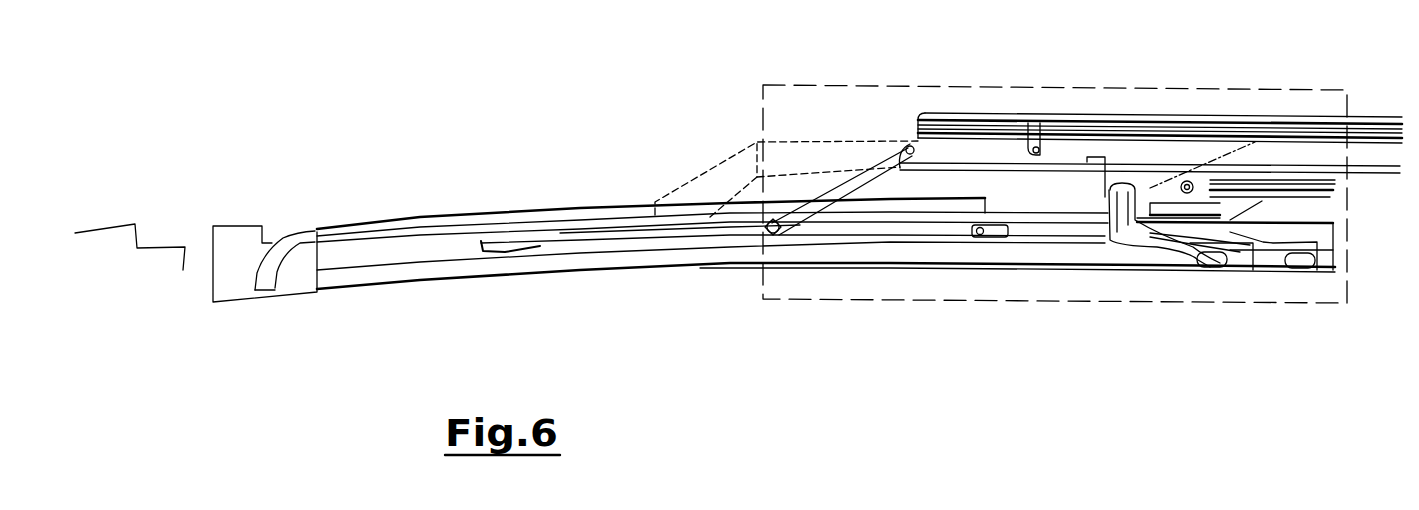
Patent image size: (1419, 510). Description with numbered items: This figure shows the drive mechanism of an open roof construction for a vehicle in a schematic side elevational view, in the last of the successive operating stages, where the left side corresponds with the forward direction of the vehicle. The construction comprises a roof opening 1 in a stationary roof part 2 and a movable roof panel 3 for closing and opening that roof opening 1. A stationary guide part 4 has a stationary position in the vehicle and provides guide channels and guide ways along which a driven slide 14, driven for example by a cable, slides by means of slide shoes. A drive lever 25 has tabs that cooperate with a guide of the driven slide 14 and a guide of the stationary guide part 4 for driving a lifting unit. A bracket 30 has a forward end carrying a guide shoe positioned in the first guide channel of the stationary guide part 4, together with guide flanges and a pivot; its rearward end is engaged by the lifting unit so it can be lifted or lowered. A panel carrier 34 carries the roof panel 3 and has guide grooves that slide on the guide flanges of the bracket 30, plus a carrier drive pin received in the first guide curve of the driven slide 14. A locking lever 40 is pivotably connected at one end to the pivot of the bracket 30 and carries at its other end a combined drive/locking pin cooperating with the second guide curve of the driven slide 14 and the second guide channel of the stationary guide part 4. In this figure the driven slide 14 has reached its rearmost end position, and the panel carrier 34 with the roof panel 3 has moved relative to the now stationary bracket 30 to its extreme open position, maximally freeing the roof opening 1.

The roof opening 1 is at (423, 210).
The stationary roof part 2 is at (103, 228).
The roof panel 3 is at (1252, 115).
The stationary guide part 4 is at (237, 242).
The driven slide 14 is at (1268, 248).
The drive lever 25 is at (913, 240).
The bracket 30 is at (682, 189).
The panel carrier 34 is at (1150, 150).
The locking lever 40 is at (843, 187).